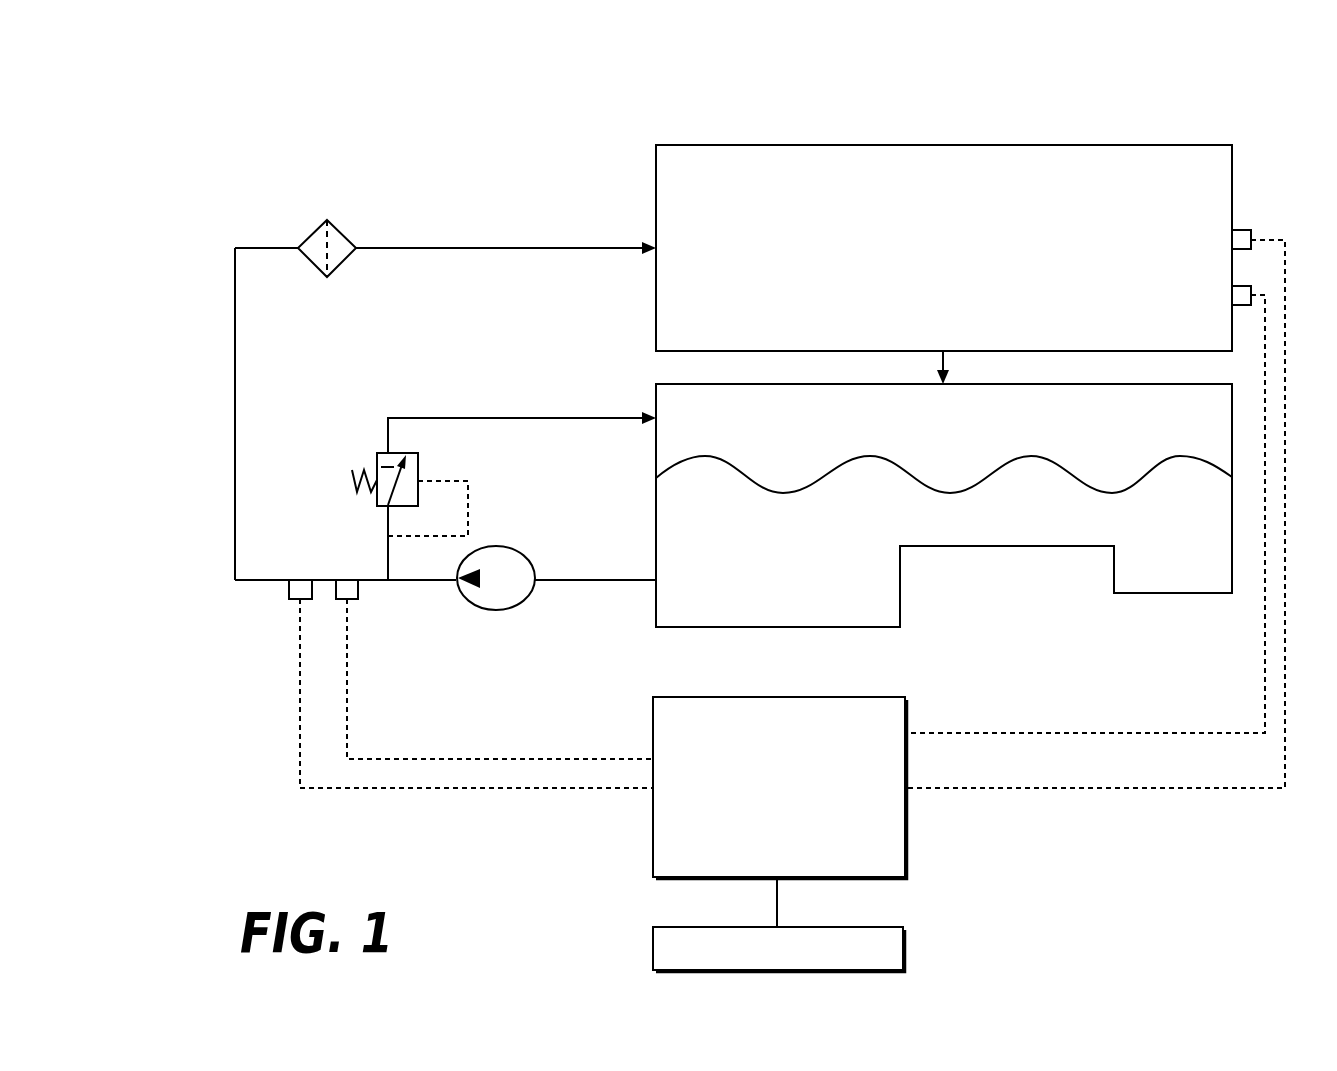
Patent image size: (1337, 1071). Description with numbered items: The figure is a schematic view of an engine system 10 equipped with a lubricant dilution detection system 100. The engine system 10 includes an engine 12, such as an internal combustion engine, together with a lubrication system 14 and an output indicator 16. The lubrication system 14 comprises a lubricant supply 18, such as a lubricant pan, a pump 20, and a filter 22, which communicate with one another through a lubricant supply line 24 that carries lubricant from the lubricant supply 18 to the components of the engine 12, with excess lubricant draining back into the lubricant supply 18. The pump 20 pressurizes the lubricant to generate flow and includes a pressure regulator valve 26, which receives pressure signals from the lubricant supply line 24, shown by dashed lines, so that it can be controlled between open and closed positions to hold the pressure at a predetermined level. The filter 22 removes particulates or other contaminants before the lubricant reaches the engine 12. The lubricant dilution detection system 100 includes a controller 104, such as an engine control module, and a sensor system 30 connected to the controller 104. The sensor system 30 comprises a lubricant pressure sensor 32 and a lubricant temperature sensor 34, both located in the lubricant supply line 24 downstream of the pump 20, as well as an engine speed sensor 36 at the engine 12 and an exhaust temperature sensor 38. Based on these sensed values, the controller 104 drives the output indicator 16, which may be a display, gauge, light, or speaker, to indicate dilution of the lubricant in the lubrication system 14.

The engine system 10 is at (1221, 116).
The engine 12 is at (937, 145).
The lubrication system 14 is at (156, 213).
The output indicator 16 is at (653, 950).
The lubricant supply 18 is at (1232, 408).
The pump 20 is at (504, 547).
The filter 22 is at (327, 220).
The lubricant supply line 24 is at (235, 524).
The pressure regulator valve 26 is at (395, 455).
The sensor system 30 is at (190, 673).
The lubricant pressure sensor 32 is at (358, 590).
The lubricant temperature sensor 34 is at (289, 590).
The engine speed sensor 36 is at (1239, 230).
The exhaust temperature sensor 38 is at (1250, 286).
The lubricant dilution detection system 100 is at (1077, 882).
The controller 104 is at (653, 849).